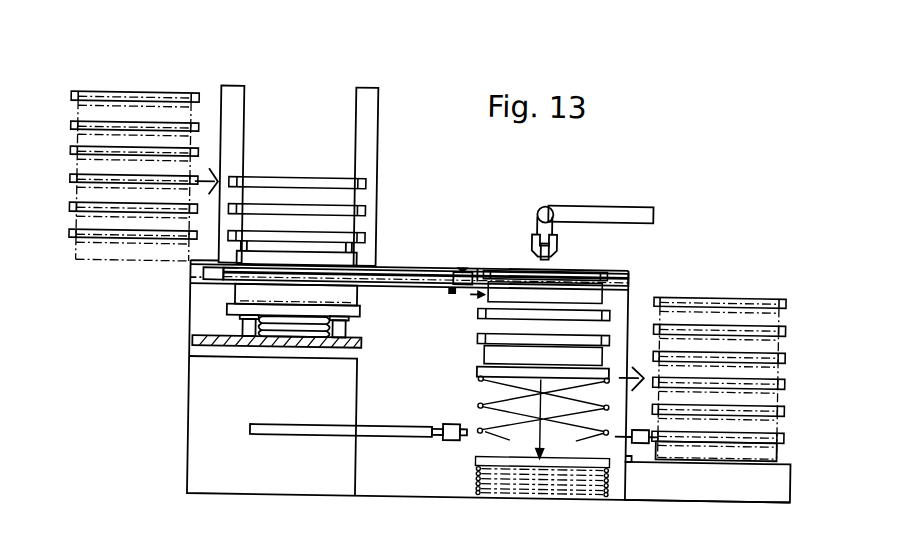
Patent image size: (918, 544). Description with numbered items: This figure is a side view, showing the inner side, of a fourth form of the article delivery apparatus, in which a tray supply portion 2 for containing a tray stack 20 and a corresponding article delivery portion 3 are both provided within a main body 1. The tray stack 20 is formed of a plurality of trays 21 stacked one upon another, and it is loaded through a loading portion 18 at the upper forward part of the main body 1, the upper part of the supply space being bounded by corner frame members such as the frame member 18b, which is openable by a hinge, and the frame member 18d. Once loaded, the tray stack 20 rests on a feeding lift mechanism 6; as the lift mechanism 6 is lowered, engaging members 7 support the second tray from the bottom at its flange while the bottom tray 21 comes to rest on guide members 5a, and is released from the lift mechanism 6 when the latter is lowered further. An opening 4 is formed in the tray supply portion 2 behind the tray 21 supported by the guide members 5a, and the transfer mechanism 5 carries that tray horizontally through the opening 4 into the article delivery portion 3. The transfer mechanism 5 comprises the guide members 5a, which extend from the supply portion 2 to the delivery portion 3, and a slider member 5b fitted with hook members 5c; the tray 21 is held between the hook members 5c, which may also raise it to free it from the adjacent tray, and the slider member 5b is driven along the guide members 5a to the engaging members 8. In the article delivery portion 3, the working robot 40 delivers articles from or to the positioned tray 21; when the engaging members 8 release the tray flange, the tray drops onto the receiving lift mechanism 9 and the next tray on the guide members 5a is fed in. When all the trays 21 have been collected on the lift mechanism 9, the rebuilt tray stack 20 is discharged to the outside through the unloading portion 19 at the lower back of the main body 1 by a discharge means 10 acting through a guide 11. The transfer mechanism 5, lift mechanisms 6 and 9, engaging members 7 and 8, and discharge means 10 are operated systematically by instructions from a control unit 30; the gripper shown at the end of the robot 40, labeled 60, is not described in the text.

The main body 1 is at (409, 252).
The tray supply portion 2 is at (324, 194).
The article delivery portion 3 is at (575, 263).
The opening 4 is at (373, 269).
The transfer mechanism 5 is at (330, 274).
The guide members 5a is at (408, 279).
The slider member 5b is at (458, 268).
The hook members 5c is at (481, 264).
The feeding lift mechanism 6 is at (355, 310).
The engaging members 7 is at (350, 246).
The engaging members 8 is at (239, 277).
The receiving lift mechanism 9 is at (476, 365).
The discharge means 10 is at (392, 421).
The guide 11 is at (690, 487).
The loading portion 18 is at (303, 160).
The frame member 18b is at (231, 90).
The frame member 18d is at (368, 88).
The unloading portion 19 is at (634, 445).
The tray stack 20 is at (134, 93).
The tray 21 is at (271, 192).
The control unit 30 is at (196, 405).
The working robot 40 is at (630, 203).
The gripper 60 is at (536, 247).